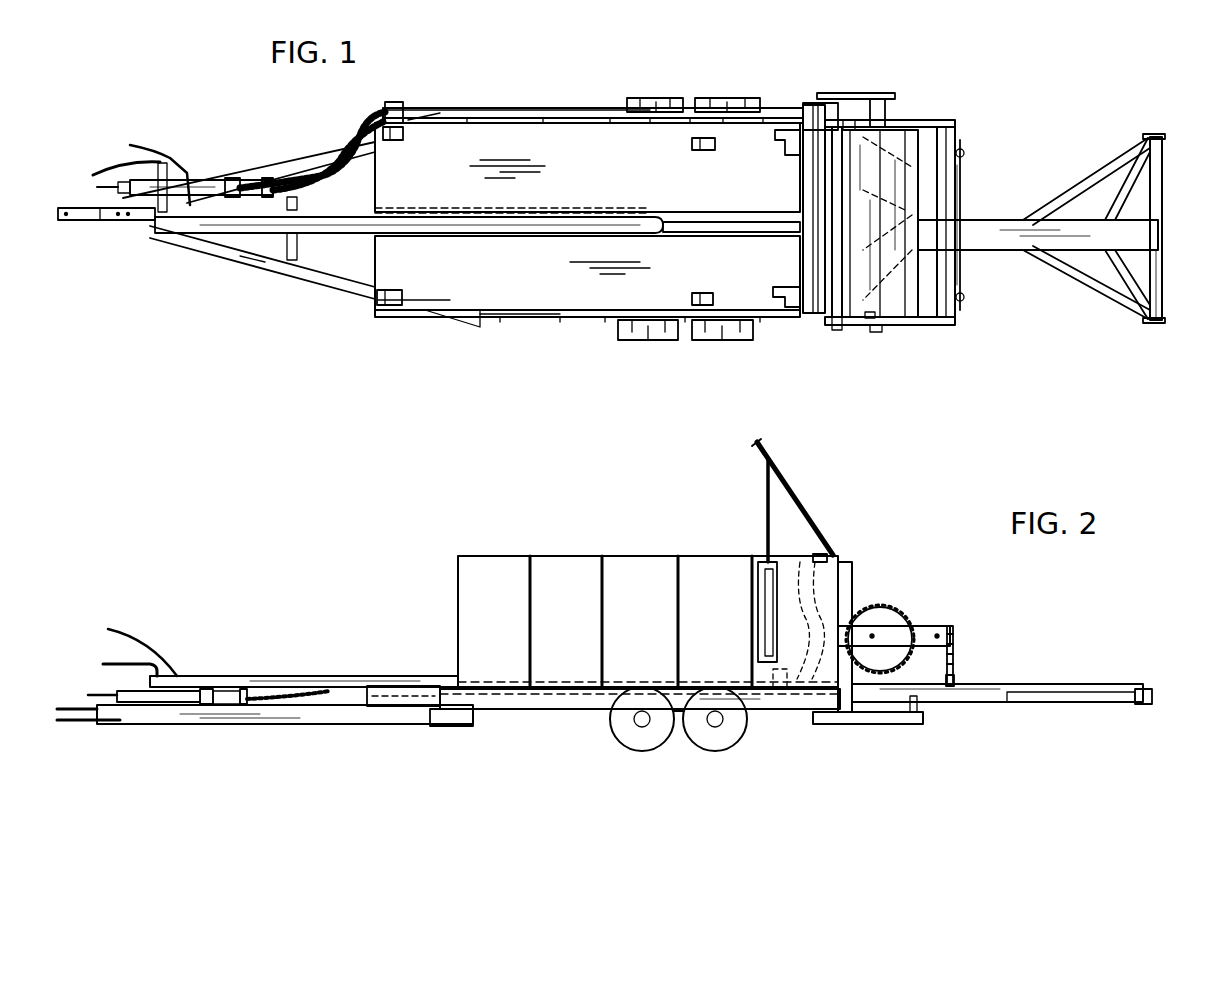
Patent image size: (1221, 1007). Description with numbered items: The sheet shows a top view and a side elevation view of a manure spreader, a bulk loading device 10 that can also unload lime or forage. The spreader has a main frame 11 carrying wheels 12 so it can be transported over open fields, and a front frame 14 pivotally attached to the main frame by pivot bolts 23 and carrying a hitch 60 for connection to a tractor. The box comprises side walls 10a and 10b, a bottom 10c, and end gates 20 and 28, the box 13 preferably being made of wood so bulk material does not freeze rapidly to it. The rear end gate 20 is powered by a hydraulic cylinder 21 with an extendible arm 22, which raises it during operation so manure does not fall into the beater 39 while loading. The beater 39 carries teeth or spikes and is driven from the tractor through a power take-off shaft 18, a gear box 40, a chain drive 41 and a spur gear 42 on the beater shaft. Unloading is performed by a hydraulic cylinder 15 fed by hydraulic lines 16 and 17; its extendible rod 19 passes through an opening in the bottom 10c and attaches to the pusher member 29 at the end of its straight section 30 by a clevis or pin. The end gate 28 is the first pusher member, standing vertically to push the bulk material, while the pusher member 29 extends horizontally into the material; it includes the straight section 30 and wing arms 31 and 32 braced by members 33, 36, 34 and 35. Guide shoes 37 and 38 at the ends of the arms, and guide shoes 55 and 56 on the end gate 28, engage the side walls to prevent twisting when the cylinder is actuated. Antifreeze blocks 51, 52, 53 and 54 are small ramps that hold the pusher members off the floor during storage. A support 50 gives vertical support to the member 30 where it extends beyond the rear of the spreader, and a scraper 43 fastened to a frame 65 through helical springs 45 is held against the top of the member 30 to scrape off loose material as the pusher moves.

In FIG. 1, the bulk loading device 10 is at (527, 86).
In FIG. 1, the side wall 10a is at (515, 318).
In FIG. 1, the side wall 10b is at (503, 120).
In FIG. 1, the bottom 10c is at (443, 297).
In FIG. 2, the main frame 11 is at (557, 712).
In FIG. 1, the wheels 12 is at (663, 98).
In FIG. 2, the wheels 12 is at (658, 745).
In FIG. 2, the body enclosure 13 is at (517, 556).
In FIG. 1, the front frame 14 is at (258, 263).
In FIG. 2, the front frame 14 is at (383, 728).
In FIG. 1, the hydraulic cylinder 15 is at (318, 223).
In FIG. 2, the hydraulic cylinder 15 is at (247, 677).
In FIG. 1, the hydraulic line 16 is at (158, 162).
In FIG. 2, the hydraulic line 16 is at (165, 648).
In FIG. 1, the hydraulic line 17 is at (112, 163).
In FIG. 2, the hydraulic line 17 is at (112, 662).
In FIG. 1, the power take-off shaft 18 is at (215, 182).
In FIG. 2, the power take-off shaft 18 is at (295, 690).
In FIG. 1, the extendible rod 19 is at (693, 231).
In FIG. 2, the rear end gate 20 is at (810, 510).
In FIG. 2, the hydraulic cylinder 21 is at (765, 605).
In FIG. 2, the extendible arm 22 is at (766, 540).
In FIG. 2, the pivot bolts 23 is at (478, 712).
In FIG. 1, the end gate 28 is at (808, 140).
In FIG. 2, the end gate 28 is at (823, 557).
In FIG. 1, the pusher member 29 is at (1017, 288).
In FIG. 2, the pusher member 29 is at (1042, 717).
In FIG. 1, the straight section 30 is at (993, 252).
In FIG. 2, the straight section 30 is at (1113, 685).
In FIG. 1, the arm 31 is at (1163, 178).
In FIG. 1, the arm 32 is at (1162, 261).
In FIG. 1, the brace member 33 is at (1120, 190).
In FIG. 1, the brace member 34 is at (1127, 283).
In FIG. 1, the brace member 35 is at (1065, 277).
In FIG. 1, the brace member 36 is at (1060, 193).
In FIG. 1, the guide shoe 37 is at (1158, 135).
In FIG. 1, the guide shoe 38 is at (1147, 323).
In FIG. 1, the beater 39 is at (893, 143).
In FIG. 2, the beater 39 is at (890, 620).
In FIG. 1, the gear box 40 is at (807, 102).
In FIG. 1, the chain drive 41 is at (867, 93).
In FIG. 1, the spur gear 42 is at (895, 93).
In FIG. 1, the scraper 43 is at (962, 172).
In FIG. 2, the scraper 43 is at (954, 680).
In FIG. 2, the helical springs 45 is at (953, 650).
In FIG. 2, the support 50 is at (888, 726).
In FIG. 1, the antifreeze block 51 is at (705, 305).
In FIG. 1, the antifreeze block 52 is at (705, 138).
In FIG. 1, the antifreeze block 53 is at (375, 130).
In FIG. 1, the antifreeze block 54 is at (378, 307).
In FIG. 1, the guide shoe 55 is at (785, 318).
In FIG. 1, the guide shoe 56 is at (785, 133).
In FIG. 1, the hitch 60 is at (78, 221).
In FIG. 2, the hitch 60 is at (83, 723).
In FIG. 2, the frame 65 is at (942, 627).